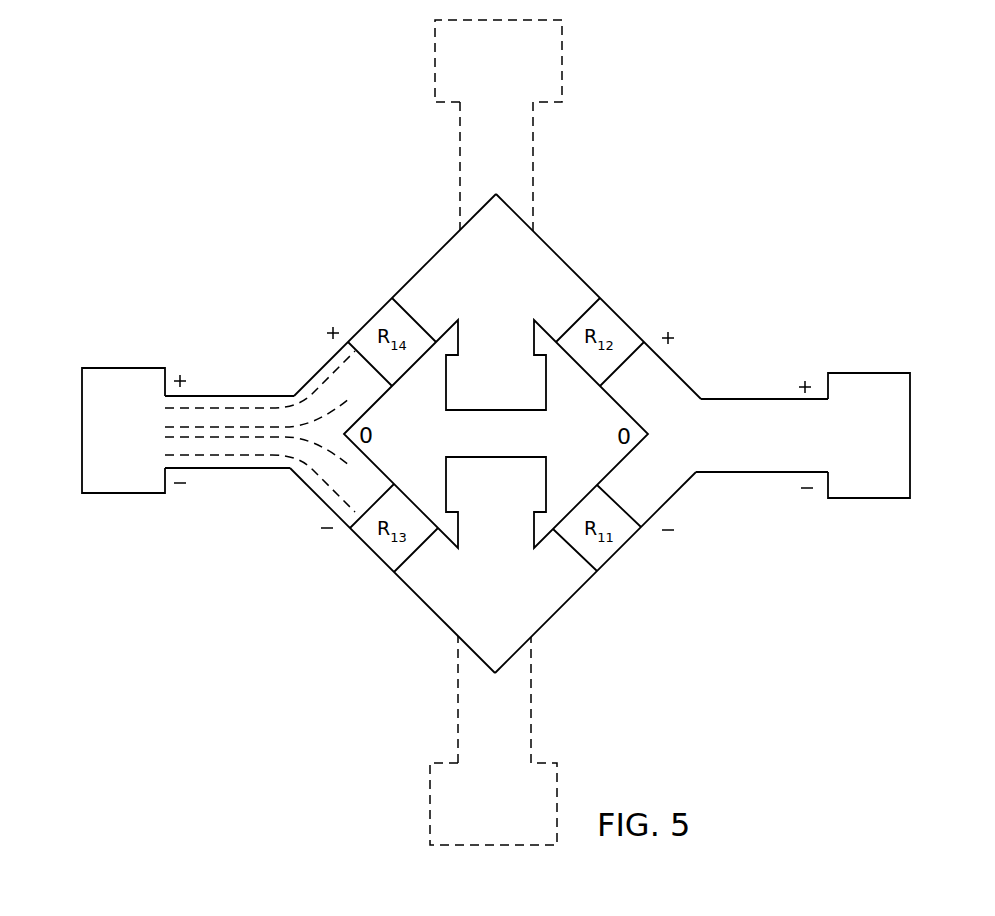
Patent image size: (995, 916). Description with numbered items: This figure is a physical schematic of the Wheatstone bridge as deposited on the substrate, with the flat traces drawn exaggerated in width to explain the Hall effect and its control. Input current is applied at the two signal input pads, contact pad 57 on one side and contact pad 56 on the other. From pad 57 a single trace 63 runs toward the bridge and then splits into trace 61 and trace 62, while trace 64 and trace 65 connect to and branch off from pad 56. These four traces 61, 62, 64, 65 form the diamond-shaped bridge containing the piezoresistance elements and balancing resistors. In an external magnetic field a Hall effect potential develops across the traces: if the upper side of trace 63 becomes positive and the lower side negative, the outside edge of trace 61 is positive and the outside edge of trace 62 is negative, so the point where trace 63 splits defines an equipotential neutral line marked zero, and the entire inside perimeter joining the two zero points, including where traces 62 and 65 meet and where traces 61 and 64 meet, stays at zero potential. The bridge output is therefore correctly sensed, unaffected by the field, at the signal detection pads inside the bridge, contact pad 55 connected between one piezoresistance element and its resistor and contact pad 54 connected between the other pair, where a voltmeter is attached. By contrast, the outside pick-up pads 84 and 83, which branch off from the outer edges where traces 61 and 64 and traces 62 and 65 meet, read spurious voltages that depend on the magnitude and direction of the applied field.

The signal pick-up pad 84 is at (566, 44).
The signal pick-up pad 83 is at (427, 797).
The trace 61 is at (422, 270).
The trace 64 is at (562, 264).
The trace 62 is at (420, 594).
The trace 65 is at (562, 603).
The trace 63 is at (238, 396).
The contact pad 57 is at (115, 487).
The contact pad 56 is at (867, 387).
The contact pad 55 is at (546, 397).
The contact pad 54 is at (546, 487).